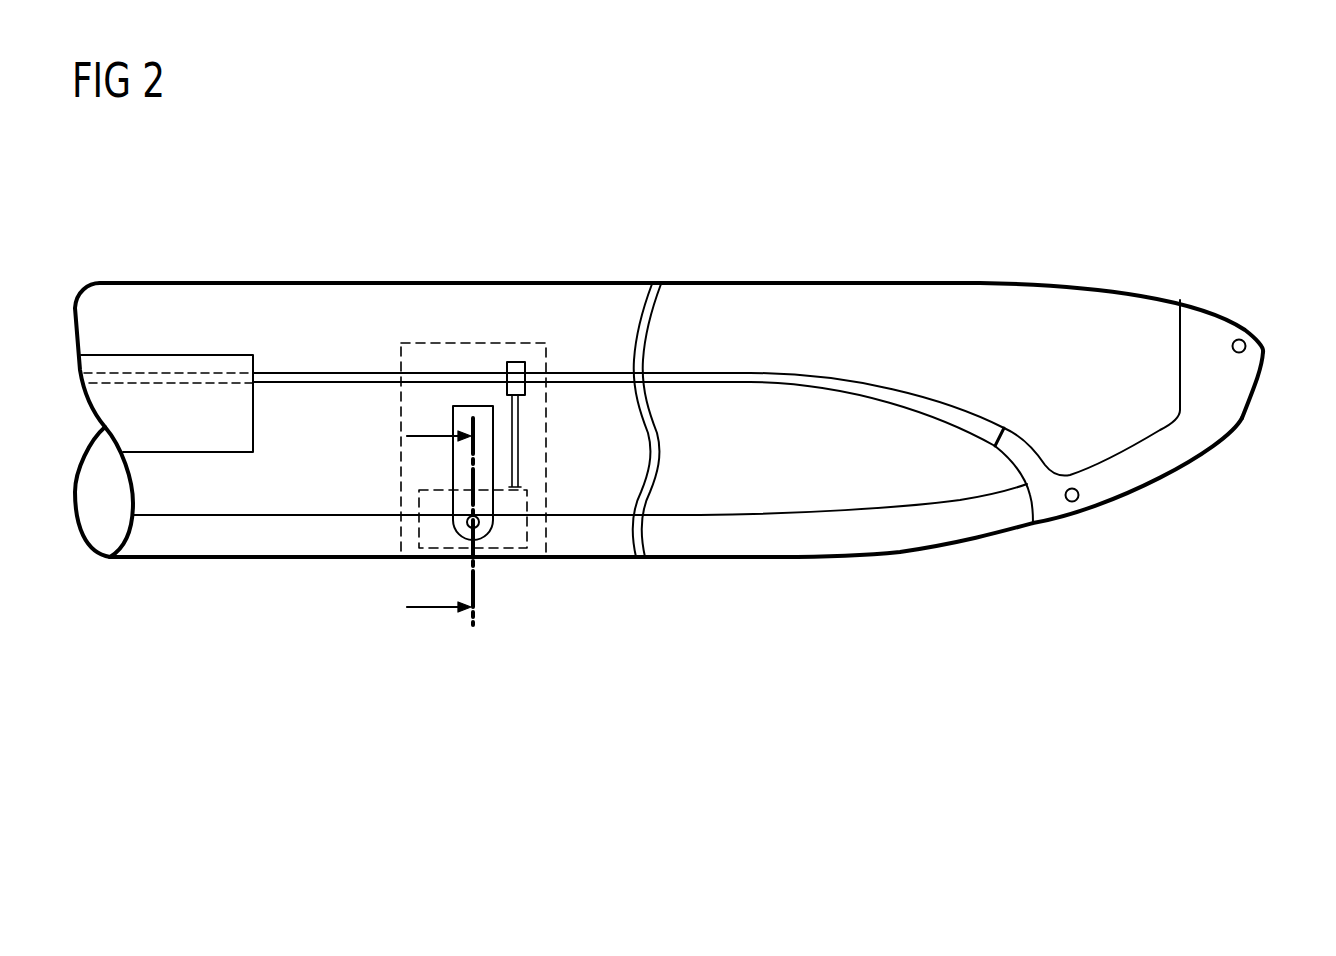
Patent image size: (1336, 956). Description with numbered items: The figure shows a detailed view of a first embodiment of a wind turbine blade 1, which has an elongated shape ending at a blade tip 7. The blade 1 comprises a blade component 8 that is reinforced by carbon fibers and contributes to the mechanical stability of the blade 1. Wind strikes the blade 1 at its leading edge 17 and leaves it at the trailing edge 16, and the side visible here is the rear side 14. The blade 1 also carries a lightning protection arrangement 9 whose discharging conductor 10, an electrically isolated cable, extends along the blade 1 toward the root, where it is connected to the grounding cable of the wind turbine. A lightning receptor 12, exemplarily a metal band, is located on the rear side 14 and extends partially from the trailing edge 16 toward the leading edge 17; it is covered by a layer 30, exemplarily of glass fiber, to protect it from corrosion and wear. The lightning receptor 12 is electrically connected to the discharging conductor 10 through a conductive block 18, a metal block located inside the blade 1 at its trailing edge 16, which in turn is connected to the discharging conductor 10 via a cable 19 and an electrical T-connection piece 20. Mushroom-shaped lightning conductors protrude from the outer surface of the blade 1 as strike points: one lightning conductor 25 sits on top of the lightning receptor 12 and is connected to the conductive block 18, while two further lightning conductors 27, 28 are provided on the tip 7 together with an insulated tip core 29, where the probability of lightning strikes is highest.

The blade 1 is at (1185, 159).
The blade tip 7 is at (1266, 346).
The blade component 8 is at (177, 355).
The lightning protection arrangement 9 is at (928, 236).
The discharging conductor 10 is at (750, 372).
The lightning receptor 12 is at (473, 406).
The rear side 14 is at (997, 592).
The trailing edge 16 is at (803, 524).
The leading edge 17 is at (1002, 284).
The conductive block 18 is at (418, 542).
The cable 19 is at (521, 437).
The electrical T-connection piece 20 is at (514, 362).
The lightning conductor 25 is at (480, 523).
The lightning conductor 27 is at (1072, 502).
The lightning conductor 28 is at (1238, 339).
The insulated tip core 29 is at (1172, 459).
The layer 30 is at (421, 343).